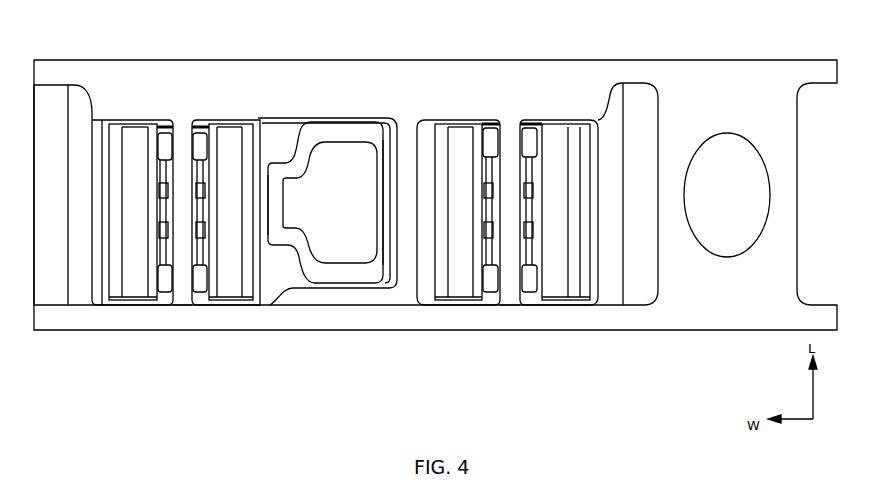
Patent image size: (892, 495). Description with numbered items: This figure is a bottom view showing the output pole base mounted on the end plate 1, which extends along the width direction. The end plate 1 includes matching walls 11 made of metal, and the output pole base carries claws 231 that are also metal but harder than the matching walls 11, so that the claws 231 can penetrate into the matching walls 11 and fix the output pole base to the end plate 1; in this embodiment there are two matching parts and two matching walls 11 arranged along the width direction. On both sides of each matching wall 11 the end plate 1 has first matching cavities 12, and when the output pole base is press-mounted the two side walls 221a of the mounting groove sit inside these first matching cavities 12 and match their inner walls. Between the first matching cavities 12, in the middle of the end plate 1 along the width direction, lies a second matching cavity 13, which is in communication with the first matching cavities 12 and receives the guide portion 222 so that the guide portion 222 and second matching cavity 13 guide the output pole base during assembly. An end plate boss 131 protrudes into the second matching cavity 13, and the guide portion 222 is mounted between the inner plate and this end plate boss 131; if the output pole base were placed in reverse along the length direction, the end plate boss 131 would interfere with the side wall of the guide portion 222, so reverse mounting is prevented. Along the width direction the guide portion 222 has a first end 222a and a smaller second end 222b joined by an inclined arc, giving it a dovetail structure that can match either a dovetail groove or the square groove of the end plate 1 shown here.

The end plate 1 is at (720, 68).
The matching wall 11 is at (189, 292).
The first matching cavity 12 is at (50, 90).
The second matching cavity 13 is at (278, 126).
The end plate boss 131 is at (330, 288).
The side wall 221a is at (455, 300).
The guide portion 222 is at (330, 132).
The first end 222a is at (390, 265).
The second end 222b is at (275, 270).
The claw 231 is at (496, 124).